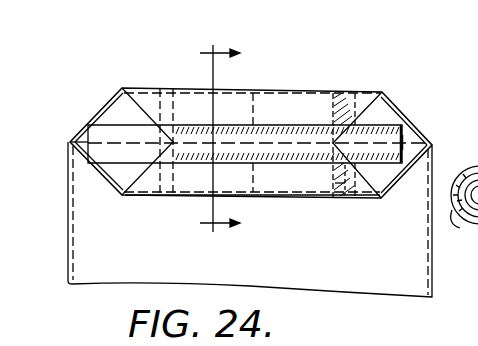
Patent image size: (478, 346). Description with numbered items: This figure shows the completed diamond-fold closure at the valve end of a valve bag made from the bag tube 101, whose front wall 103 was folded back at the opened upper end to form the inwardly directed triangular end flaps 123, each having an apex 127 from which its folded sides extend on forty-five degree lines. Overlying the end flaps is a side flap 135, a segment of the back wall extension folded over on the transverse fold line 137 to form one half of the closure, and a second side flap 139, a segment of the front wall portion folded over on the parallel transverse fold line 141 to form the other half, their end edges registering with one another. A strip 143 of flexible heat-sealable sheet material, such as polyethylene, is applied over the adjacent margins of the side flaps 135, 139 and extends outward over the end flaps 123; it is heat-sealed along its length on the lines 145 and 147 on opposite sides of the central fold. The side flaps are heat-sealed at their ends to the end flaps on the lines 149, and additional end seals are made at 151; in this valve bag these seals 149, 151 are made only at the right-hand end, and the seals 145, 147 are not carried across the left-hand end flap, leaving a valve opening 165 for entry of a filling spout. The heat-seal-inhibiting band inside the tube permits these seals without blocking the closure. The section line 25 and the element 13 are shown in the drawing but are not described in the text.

The roller 13 is at (452, 222).
The section line 25- 25 is at (201, 138).
The bag tube 101 is at (88, 289).
The front wall 103 is at (283, 271).
The triangular end flaps 123 is at (118, 108).
The apex of triangular end flap 127 is at (70, 140).
The side flap segment of back extension 135 is at (300, 100).
The transverse fold line 137 is at (348, 90).
The second side flap segment 139 is at (270, 188).
The transverse fold line 141 is at (347, 198).
The strip of heat-sealable sheet material 143 is at (405, 135).
The heat seal line 145 is at (298, 130).
The heat seal line 147 is at (268, 163).
The end seal lines 149 is at (335, 183).
The additional end seals 151 is at (366, 92).
The valve opening 165 is at (130, 169).